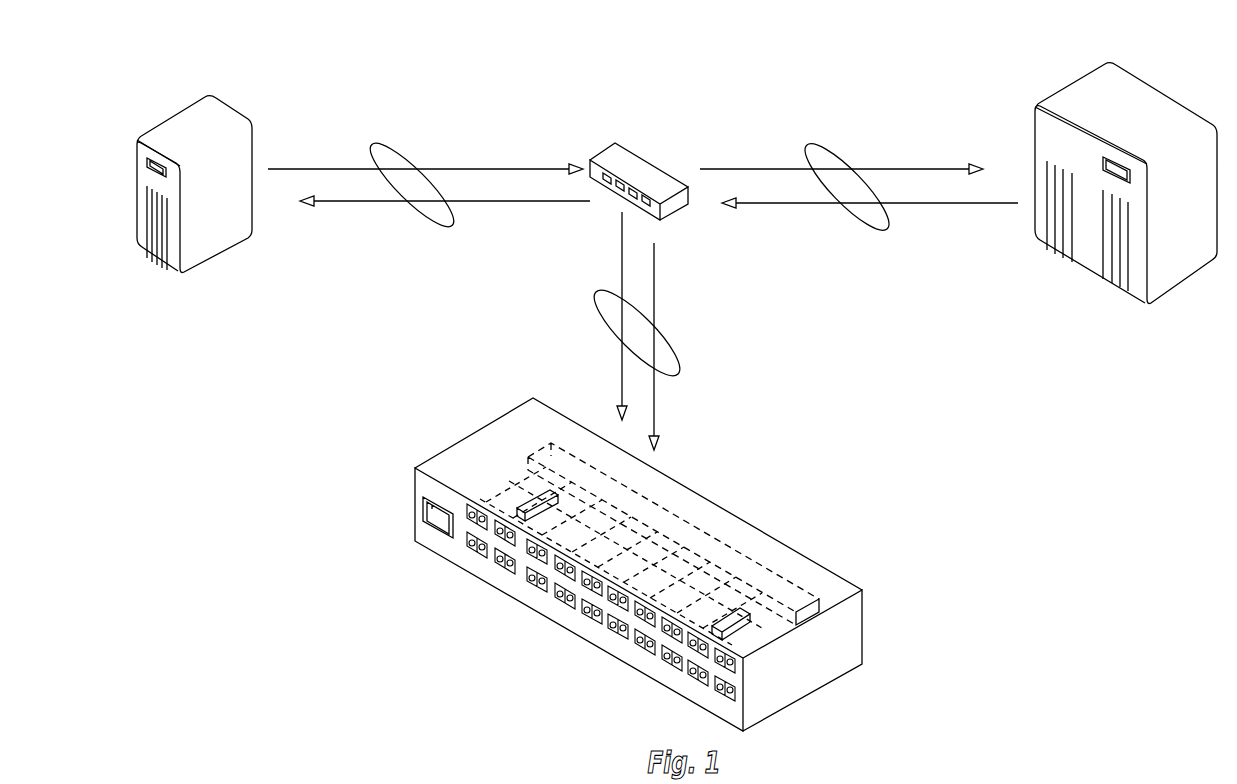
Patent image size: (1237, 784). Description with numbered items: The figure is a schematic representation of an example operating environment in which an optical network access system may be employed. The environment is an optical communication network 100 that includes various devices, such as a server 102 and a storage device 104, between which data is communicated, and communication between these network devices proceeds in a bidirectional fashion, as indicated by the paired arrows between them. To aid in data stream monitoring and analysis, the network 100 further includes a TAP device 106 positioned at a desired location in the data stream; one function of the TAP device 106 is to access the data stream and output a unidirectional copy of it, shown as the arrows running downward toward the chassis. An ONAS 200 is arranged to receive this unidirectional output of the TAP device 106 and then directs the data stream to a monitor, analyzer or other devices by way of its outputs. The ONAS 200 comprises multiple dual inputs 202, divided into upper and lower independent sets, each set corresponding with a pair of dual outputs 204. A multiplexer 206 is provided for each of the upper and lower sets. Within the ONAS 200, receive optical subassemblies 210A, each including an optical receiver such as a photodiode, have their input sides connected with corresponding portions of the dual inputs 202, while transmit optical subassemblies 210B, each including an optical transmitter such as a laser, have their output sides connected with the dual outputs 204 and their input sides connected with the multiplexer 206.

The optical communication network 100 is at (722, 72).
The server 102 is at (230, 107).
The storage device 104 is at (1163, 93).
The TAP device 106 is at (642, 158).
The ONAS 200 is at (405, 440).
The dual inputs 202 is at (562, 618).
The dual outputs 204 is at (470, 577).
The multiplexer 206 is at (717, 540).
The receive optical subassembly 210A is at (737, 625).
The transmit optical subassembly 210B is at (527, 507).